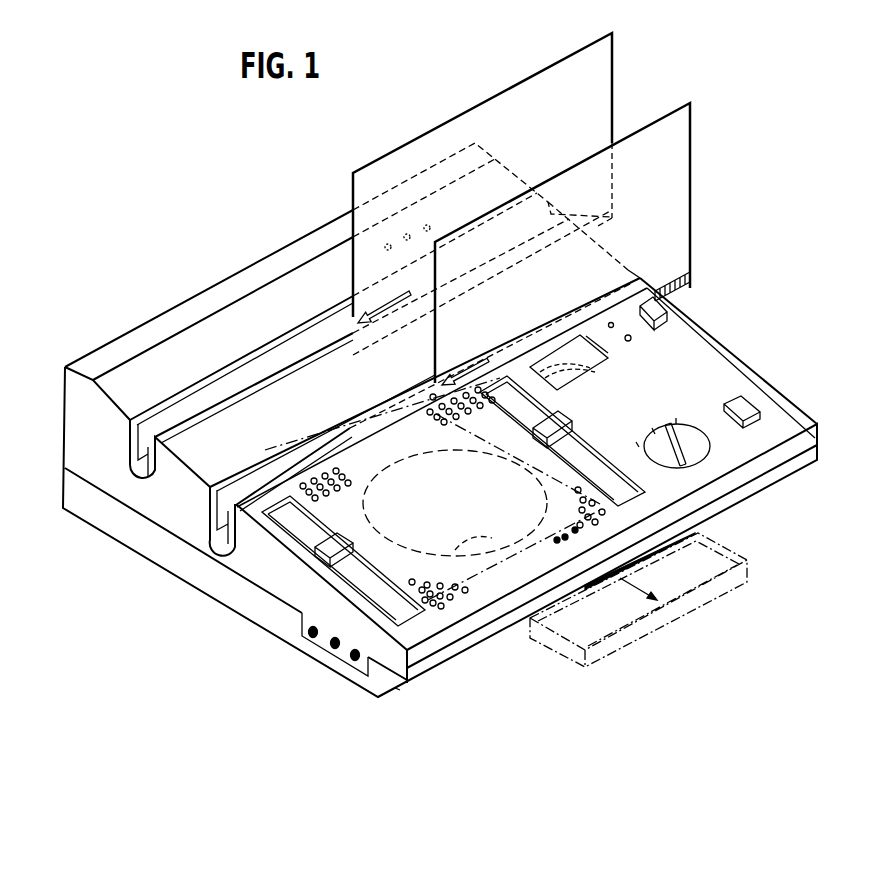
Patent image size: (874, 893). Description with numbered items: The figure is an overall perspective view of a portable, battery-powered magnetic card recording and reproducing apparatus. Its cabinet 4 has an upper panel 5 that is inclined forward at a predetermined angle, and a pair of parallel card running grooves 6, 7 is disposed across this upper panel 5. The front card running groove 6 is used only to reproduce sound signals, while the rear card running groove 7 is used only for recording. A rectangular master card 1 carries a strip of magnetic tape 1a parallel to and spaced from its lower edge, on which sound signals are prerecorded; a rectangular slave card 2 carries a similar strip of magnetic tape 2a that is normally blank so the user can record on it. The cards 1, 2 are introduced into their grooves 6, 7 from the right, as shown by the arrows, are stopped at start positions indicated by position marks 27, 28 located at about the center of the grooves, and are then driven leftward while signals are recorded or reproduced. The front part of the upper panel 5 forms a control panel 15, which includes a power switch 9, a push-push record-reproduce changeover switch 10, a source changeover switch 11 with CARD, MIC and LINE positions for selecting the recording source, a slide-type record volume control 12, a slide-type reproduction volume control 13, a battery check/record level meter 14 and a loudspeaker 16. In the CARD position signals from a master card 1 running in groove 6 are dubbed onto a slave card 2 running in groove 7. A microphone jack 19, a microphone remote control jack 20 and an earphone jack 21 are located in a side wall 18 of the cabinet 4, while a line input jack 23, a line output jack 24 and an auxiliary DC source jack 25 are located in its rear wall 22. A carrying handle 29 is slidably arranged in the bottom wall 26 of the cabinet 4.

The master card 1 is at (723, 123).
The magnetic tape 1a is at (688, 289).
The slave card 2 is at (650, 60).
The magnetic tape 2a is at (612, 218).
The cabinet 4 is at (186, 565).
The upper panel 5 is at (717, 373).
The front card running groove 6 is at (287, 460).
The rear card running groove 7 is at (247, 367).
The power switch 9 is at (745, 400).
The record-reproduce changeover switch 10 is at (663, 307).
The source changeover switch 11 is at (707, 443).
The record volume control 12 is at (565, 416).
The reproduction volume control 13 is at (347, 540).
The battery check/record level meter 14 is at (580, 363).
The control panel 15 is at (690, 394).
The loudspeaker 16 is at (453, 552).
The side wall 18 is at (233, 597).
The microphone jack 19 is at (307, 640).
The microphone remote control jack 20 is at (327, 650).
The earphone jack 21 is at (347, 667).
The rear wall 22 is at (202, 290).
The line input jack 23 is at (428, 224).
The line output jack 24 is at (406, 233).
The auxiliary DC source jack 25 is at (387, 251).
The bottom wall 26 is at (395, 692).
The position mark 27 is at (431, 400).
The position mark 28 is at (350, 327).
The carrying handle 29 is at (548, 622).